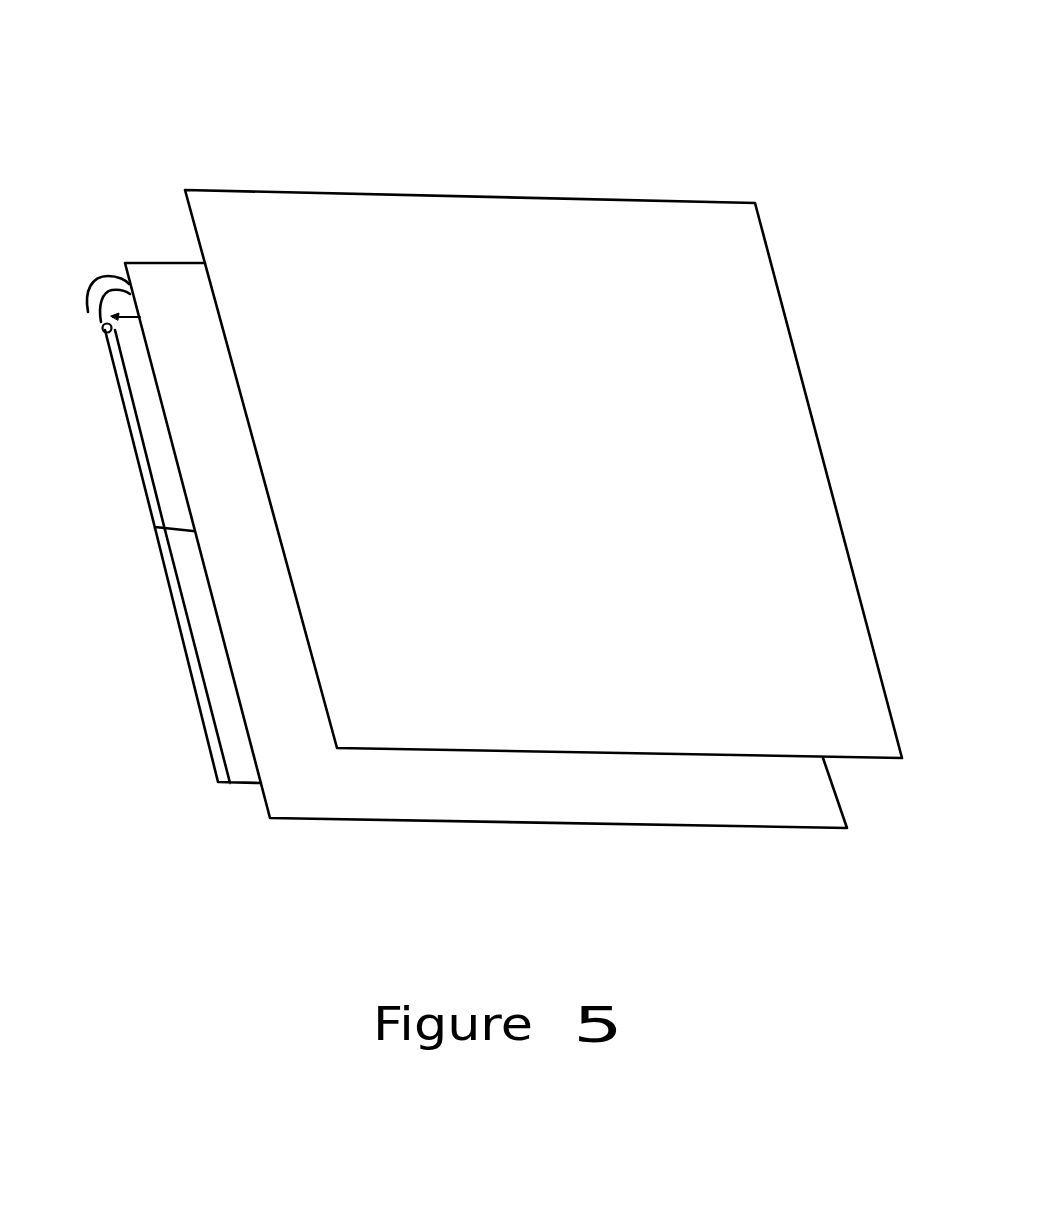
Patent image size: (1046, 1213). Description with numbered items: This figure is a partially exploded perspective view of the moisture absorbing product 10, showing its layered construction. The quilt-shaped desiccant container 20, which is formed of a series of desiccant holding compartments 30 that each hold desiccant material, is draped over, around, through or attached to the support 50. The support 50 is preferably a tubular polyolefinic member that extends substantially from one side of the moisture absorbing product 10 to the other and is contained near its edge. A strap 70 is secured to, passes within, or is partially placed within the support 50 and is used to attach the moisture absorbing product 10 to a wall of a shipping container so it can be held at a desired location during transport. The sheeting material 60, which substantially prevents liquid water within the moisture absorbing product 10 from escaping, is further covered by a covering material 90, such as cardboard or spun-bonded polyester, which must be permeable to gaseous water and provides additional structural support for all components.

The moisture absorbing product 10 is at (232, 81).
The desiccant container 20 is at (192, 673).
The desiccant holding compartments 30 is at (157, 447).
The support 50 is at (108, 335).
The sheeting material 60 is at (163, 277).
The strap 70 is at (97, 293).
The covering material 90 is at (677, 215).